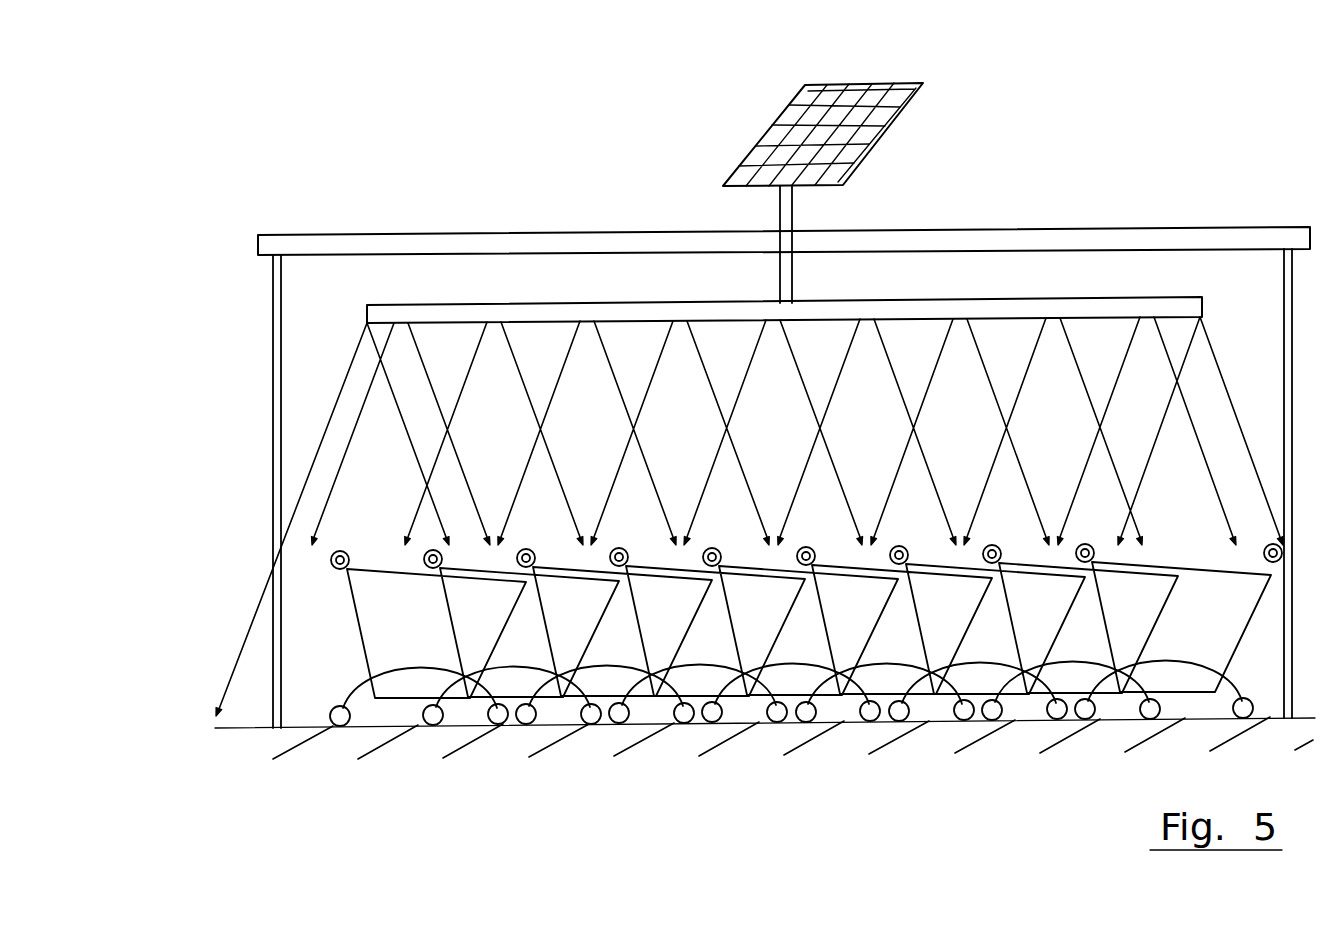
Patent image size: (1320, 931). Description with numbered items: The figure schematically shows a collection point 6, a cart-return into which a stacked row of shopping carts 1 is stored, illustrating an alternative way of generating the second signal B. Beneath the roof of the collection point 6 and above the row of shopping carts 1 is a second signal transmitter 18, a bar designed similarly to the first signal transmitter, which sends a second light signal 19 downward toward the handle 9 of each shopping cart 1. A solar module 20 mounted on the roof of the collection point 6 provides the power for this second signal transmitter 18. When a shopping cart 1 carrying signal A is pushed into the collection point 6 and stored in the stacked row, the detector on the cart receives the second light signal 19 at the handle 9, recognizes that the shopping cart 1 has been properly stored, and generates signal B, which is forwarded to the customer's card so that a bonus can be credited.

The shopping cart 1 is at (372, 612).
The collection point 6 is at (263, 257).
The handle 9 is at (331, 558).
The second signal transmitter 18 is at (1103, 308).
The second light signal 19 is at (1228, 387).
The solar module 20 is at (903, 113).